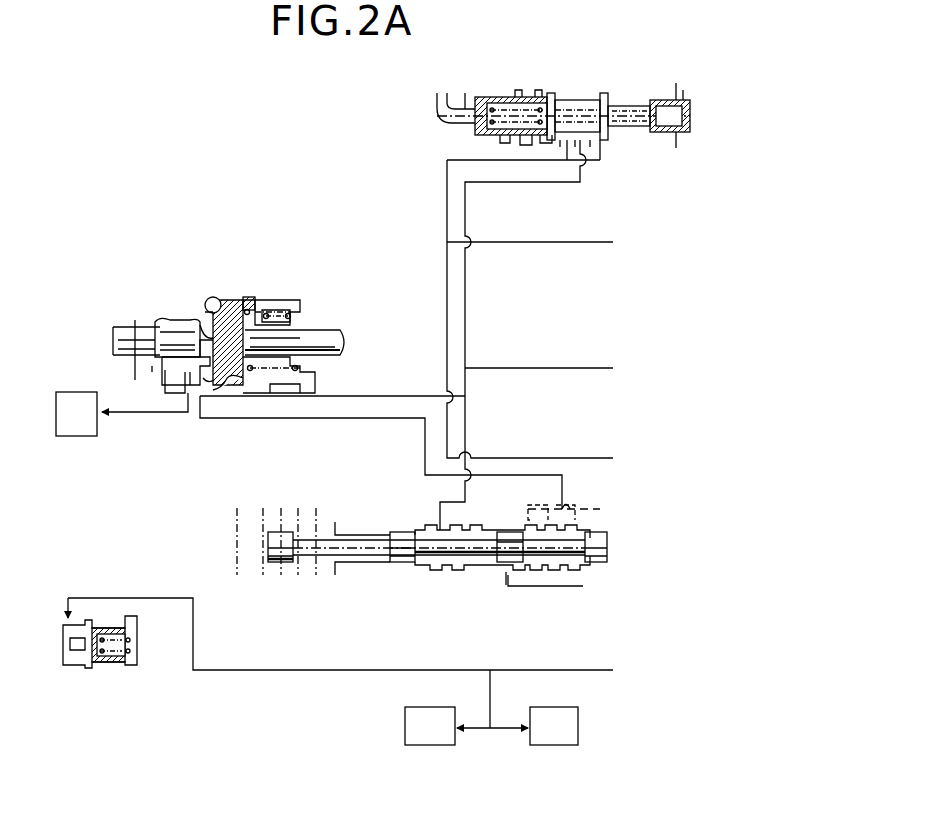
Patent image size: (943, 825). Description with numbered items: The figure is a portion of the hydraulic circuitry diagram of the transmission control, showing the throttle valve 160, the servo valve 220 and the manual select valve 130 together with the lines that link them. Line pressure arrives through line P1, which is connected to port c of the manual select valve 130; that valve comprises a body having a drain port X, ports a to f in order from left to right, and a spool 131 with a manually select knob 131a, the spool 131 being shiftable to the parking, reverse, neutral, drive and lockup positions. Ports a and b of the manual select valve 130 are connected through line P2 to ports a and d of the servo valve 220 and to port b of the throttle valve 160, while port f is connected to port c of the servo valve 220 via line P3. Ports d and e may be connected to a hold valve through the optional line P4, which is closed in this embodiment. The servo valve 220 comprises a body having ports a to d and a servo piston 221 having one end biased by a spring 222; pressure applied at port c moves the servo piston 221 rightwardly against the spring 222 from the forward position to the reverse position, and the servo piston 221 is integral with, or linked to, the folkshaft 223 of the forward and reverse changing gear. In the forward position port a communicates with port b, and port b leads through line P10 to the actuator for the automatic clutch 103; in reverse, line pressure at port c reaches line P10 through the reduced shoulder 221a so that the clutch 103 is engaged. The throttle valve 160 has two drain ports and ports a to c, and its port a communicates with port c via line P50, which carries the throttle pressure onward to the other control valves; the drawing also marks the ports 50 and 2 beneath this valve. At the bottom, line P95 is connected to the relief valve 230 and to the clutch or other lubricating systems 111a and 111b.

The throttle valve 160 is at (598, 100).
The port 50 is at (575, 151).
The port 2 is at (583, 151).
The line P50 is at (445, 210).
The line P2 is at (467, 276).
The line P3 is at (330, 419).
The line P10 is at (172, 420).
The line P4 is at (600, 509).
The line P95 is at (530, 670).
The line P1 is at (528, 586).
The automatic clutch 103 is at (76, 414).
The servo valve 220 is at (276, 300).
The servo piston 221 is at (218, 302).
The reduced shoulder 221a is at (172, 322).
The spring 222 is at (240, 298).
The folkshaft 223 is at (285, 308).
The manual select valve 130 is at (476, 574).
The spool 131 is at (400, 566).
The manually select knob 131a is at (278, 565).
The relief valve 230 is at (106, 668).
The lubricating system 111a is at (447, 726).
The lubricating system 111b is at (534, 726).